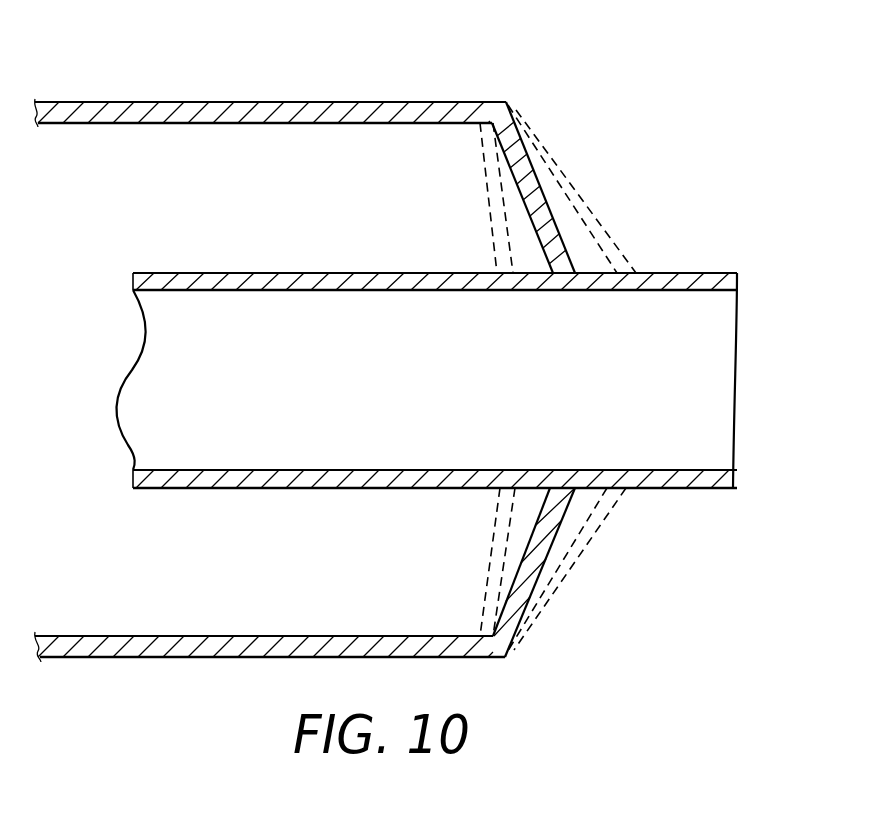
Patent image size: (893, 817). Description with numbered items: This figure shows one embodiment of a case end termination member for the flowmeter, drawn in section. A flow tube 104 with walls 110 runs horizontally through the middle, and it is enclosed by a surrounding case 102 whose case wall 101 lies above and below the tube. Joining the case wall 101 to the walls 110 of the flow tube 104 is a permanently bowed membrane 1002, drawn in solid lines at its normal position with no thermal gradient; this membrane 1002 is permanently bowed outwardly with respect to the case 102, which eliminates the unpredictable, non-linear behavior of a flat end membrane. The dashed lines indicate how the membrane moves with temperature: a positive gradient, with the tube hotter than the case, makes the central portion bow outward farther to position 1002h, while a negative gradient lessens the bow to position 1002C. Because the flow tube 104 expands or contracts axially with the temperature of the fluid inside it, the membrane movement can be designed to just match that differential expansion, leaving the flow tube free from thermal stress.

The case wall 101 is at (395, 107).
The case 102 is at (248, 101).
The flow tube 104 is at (305, 400).
The walls of flow tube 110 is at (263, 278).
The permanently bowed membrane 1002 is at (527, 197).
The membrane position under negative thermal gradient 1002C is at (488, 182).
The membrane position under positive thermal gradient 1002h is at (588, 217).